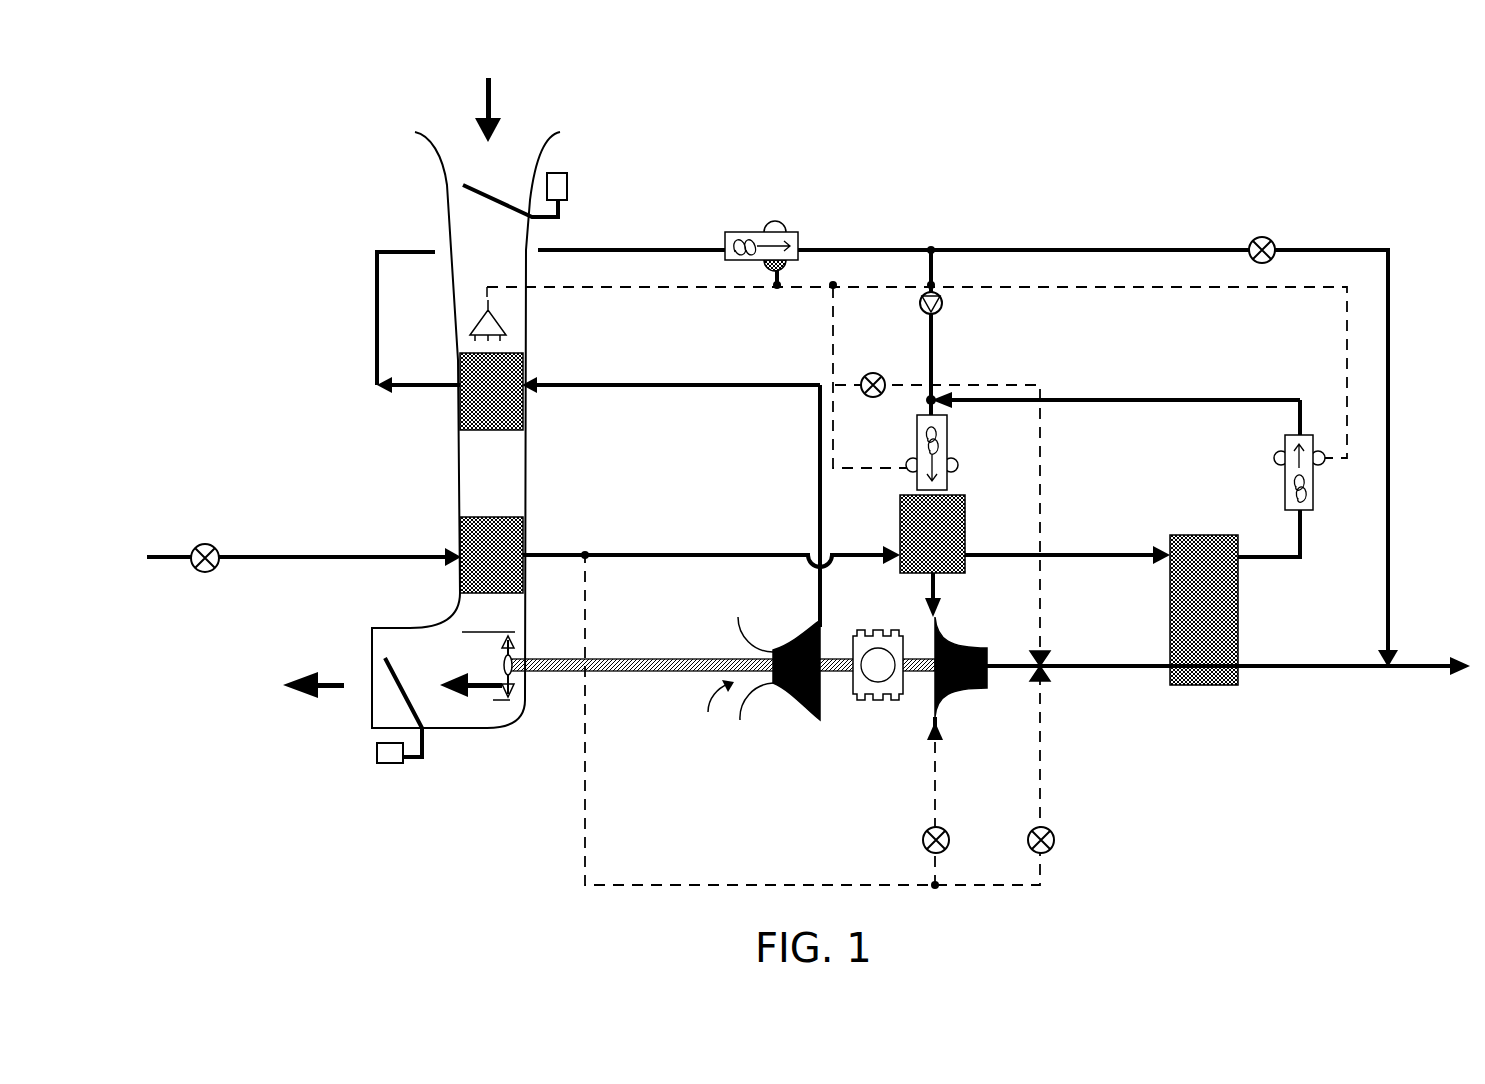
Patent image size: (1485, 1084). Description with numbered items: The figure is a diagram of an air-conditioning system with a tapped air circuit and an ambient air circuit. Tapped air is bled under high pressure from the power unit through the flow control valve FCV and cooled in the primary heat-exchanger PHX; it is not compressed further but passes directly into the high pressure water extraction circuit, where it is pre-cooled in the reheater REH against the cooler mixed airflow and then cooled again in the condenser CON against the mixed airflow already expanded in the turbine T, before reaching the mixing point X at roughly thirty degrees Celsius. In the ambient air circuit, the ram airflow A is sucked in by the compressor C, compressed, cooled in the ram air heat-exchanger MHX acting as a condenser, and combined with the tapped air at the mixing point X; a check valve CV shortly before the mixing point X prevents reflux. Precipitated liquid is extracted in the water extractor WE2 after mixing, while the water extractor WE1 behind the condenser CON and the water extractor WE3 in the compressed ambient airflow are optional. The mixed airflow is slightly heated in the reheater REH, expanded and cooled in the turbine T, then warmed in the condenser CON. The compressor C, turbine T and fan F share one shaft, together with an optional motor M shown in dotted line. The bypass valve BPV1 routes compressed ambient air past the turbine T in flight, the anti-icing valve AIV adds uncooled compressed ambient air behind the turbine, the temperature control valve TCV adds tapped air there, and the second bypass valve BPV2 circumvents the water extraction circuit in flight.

The flow control valve FCV is at (203, 546).
The ram air heat-exchanger MHX is at (491, 391).
The primary heat-exchanger PHX is at (491, 555).
The water extractor WE3 is at (761, 232).
The bypass valve BPV1 is at (1266, 235).
The check valve CV is at (947, 303).
The anti-icing valve AIV is at (873, 370).
The mixing point X is at (937, 394).
The water extractor WE2 is at (952, 452).
The water extractor WE1 is at (1280, 472).
The reheater REH is at (932, 534).
The condenser CON is at (1204, 610).
The fan F is at (488, 666).
The compressor C is at (779, 668).
The motor M is at (878, 665).
The turbine T is at (961, 669).
The ram airflow A is at (715, 713).
The second bypass valve BPV2 is at (901, 840).
The temperature control valve TCV is at (1067, 752).